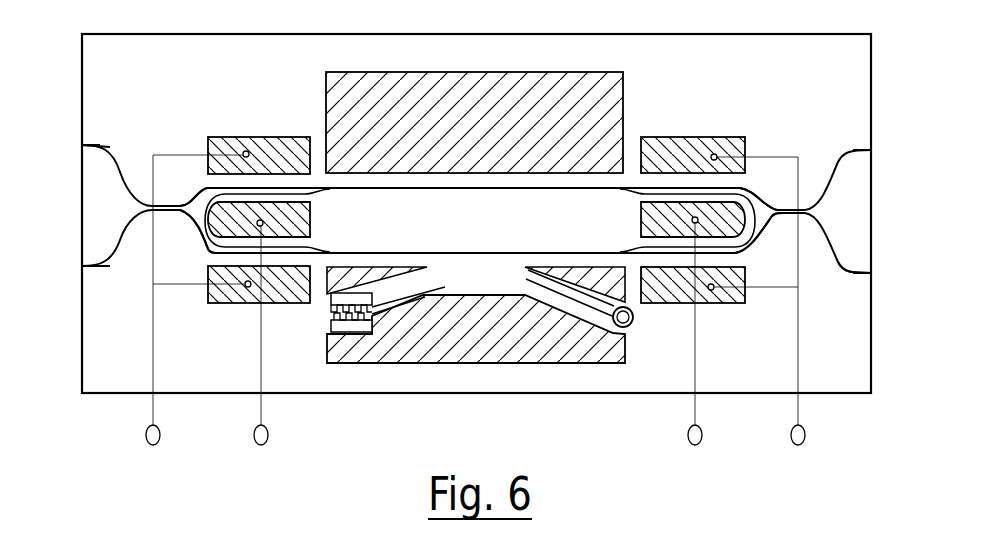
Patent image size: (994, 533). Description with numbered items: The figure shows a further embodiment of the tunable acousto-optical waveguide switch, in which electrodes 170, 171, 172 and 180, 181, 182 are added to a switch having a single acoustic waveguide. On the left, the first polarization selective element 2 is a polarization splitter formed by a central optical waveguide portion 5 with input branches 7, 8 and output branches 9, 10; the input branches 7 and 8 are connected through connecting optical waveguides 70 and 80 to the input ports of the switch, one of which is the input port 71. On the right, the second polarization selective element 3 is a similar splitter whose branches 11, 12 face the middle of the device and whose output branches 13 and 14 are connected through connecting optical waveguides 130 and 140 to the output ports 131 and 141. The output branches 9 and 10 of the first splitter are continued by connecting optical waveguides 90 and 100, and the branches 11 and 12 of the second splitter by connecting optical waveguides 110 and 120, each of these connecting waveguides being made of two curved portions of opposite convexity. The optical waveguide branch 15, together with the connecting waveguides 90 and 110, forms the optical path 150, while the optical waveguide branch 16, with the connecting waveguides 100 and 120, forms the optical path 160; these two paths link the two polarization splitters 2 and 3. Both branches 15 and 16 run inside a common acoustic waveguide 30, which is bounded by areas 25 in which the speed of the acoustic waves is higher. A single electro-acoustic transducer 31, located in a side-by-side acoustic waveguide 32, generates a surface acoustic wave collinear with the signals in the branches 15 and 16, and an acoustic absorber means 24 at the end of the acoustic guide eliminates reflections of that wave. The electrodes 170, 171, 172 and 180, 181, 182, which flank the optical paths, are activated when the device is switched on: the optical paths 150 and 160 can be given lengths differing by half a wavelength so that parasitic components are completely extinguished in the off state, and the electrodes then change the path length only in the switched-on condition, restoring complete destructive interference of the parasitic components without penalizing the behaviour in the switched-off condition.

The polarization selective element 2 is at (167, 213).
The polarization selective element 3 is at (784, 216).
The central optical waveguide portion 5 is at (164, 205).
The input branch 7 is at (142, 196).
The input branch 8 is at (139, 218).
The output branch 9 is at (185, 205).
The output branch 10 is at (202, 242).
The output branch 11 is at (770, 204).
The output branch 12 is at (749, 254).
The output branch 13 is at (821, 204).
The output branch 14 is at (815, 226).
The optical waveguide branch 15 is at (415, 190).
The optical waveguide branch 16 is at (411, 252).
The acoustic absorber means 24 is at (631, 334).
The higher acoustic speed area 25 is at (478, 71).
The common acoustic waveguide 30 is at (486, 225).
The electro-acoustic transducer 31 is at (328, 316).
The side-by-side acoustic waveguide 32 is at (392, 299).
The connecting optical waveguide 70 is at (108, 146).
The input port 71 is at (84, 145).
The connecting optical waveguide 80 is at (108, 269).
The connecting optical waveguide 90 is at (201, 184).
The connecting optical waveguide 100 is at (204, 262).
The connecting optical waveguide 110 is at (750, 184).
The connecting optical waveguide 120 is at (752, 268).
The connecting optical waveguide 130 is at (848, 148).
The output port 131 is at (873, 150).
The connecting optical waveguide 140 is at (848, 276).
The output port 141 is at (873, 274).
The optical path 150 is at (540, 194).
The optical path 160 is at (500, 251).
The electrode 170 is at (255, 146).
The electrode 171 is at (312, 220).
The electrode 172 is at (247, 304).
The electrode 180 is at (689, 146).
The electrode 181 is at (640, 215).
The electrode 182 is at (688, 304).